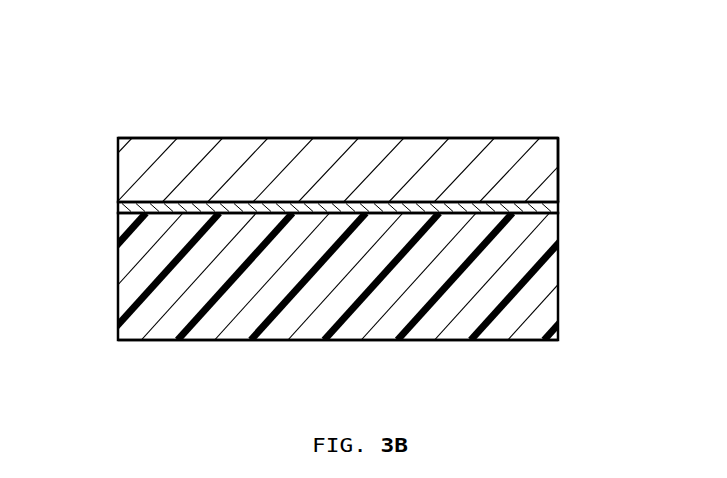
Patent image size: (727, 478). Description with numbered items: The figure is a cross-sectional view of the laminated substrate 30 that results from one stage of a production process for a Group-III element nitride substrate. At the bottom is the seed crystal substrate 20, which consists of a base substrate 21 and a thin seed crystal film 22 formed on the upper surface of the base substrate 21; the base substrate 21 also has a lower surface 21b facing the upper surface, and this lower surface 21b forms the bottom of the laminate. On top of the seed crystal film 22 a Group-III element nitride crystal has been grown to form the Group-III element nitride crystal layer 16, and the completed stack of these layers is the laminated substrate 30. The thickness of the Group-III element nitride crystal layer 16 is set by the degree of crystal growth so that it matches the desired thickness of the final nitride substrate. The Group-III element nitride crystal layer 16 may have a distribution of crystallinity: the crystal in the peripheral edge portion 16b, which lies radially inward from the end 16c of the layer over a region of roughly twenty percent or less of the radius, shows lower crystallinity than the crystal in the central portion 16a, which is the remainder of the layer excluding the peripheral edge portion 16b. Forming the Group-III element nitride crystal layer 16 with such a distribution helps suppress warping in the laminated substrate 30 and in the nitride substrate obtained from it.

The laminated substrate 30 is at (360, 192).
The Group-III element nitride crystal layer 16 is at (554, 164).
The central portion 16a is at (328, 138).
The peripheral edge portion 16b is at (528, 138).
The end 16c is at (557, 140).
The seed crystal substrate 20 is at (360, 286).
The seed crystal film 22 is at (553, 208).
The base substrate 21 is at (554, 286).
The lower surface 21b is at (133, 340).